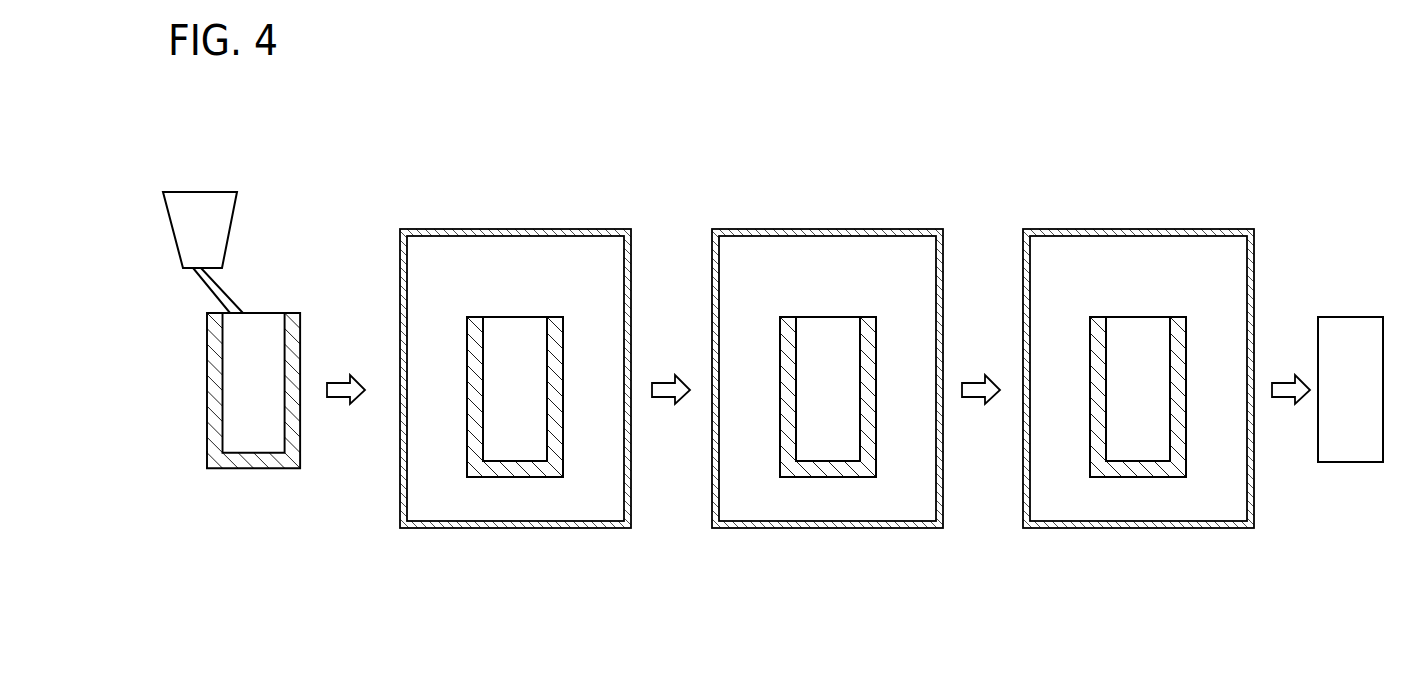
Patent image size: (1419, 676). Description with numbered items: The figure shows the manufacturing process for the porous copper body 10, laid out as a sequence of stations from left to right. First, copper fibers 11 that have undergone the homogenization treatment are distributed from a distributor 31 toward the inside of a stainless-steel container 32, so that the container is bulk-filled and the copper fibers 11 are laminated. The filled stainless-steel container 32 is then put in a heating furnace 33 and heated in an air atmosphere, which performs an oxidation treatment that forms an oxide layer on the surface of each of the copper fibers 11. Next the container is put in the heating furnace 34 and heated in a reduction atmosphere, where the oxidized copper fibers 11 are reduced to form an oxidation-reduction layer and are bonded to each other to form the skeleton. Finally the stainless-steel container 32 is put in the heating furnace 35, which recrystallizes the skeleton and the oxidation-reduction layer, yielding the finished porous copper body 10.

The porous copper body 10 is at (1348, 477).
The copper fibers 11 is at (264, 319).
The distributor 31 is at (199, 205).
The stainless-steel container 32 is at (232, 470).
The heating furnace 33 is at (442, 529).
The heating furnace 34 is at (752, 530).
The heating furnace 35 is at (1060, 530).